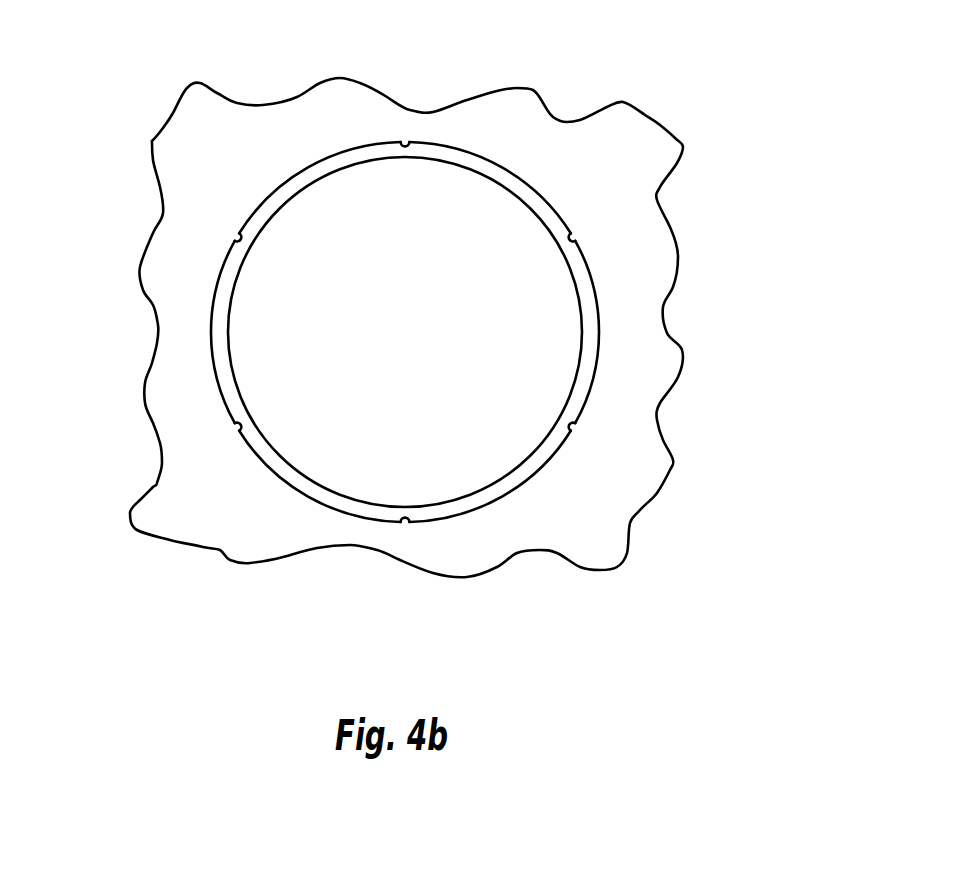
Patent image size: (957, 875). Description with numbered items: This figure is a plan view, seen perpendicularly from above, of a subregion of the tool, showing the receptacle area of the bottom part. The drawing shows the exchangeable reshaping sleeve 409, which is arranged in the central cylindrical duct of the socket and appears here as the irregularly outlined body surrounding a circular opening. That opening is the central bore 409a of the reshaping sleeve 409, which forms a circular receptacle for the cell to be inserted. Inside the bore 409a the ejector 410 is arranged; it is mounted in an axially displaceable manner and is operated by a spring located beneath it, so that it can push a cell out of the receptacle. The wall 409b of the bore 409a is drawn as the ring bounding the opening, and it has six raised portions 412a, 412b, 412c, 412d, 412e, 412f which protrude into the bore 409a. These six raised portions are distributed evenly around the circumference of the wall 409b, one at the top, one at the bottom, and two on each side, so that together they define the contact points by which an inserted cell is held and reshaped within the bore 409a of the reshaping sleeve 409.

The reshaping sleeve 409 is at (623, 140).
The bore 409a is at (273, 463).
The wall 409b is at (340, 155).
The ejector 410 is at (411, 316).
The raised portion 412a is at (242, 238).
The raised portion 412b is at (238, 425).
The raised portion 412c is at (400, 522).
The raised portion 412d is at (568, 428).
The raised portion 412e is at (569, 240).
The raised portion 412f is at (405, 142).